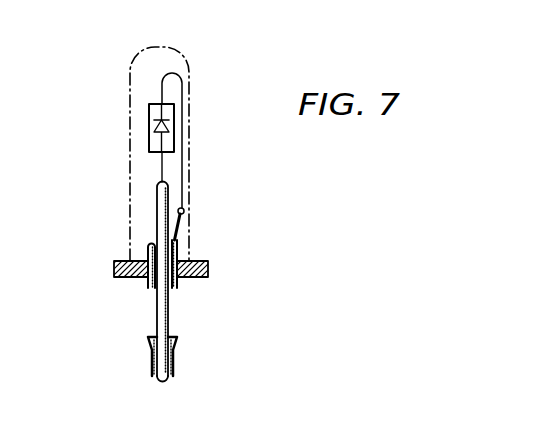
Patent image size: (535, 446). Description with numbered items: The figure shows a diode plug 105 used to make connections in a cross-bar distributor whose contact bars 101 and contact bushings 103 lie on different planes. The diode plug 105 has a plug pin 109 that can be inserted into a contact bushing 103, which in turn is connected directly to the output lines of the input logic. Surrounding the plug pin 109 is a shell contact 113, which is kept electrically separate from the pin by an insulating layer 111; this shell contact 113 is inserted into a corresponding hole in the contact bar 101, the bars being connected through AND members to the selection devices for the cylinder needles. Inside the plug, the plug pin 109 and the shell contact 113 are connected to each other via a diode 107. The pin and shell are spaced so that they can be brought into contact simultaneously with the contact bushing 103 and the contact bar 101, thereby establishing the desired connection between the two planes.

The contact bar 101 is at (125, 278).
The contact bushing 103 is at (148, 345).
The diode plug 105 is at (130, 95).
The diode 107 is at (145, 138).
The plug pin 109 is at (168, 322).
The insulating layer 111 is at (174, 250).
The shell contact 113 is at (176, 282).